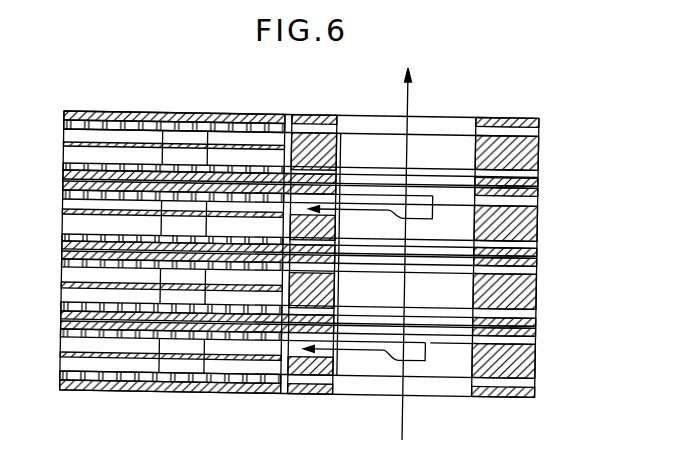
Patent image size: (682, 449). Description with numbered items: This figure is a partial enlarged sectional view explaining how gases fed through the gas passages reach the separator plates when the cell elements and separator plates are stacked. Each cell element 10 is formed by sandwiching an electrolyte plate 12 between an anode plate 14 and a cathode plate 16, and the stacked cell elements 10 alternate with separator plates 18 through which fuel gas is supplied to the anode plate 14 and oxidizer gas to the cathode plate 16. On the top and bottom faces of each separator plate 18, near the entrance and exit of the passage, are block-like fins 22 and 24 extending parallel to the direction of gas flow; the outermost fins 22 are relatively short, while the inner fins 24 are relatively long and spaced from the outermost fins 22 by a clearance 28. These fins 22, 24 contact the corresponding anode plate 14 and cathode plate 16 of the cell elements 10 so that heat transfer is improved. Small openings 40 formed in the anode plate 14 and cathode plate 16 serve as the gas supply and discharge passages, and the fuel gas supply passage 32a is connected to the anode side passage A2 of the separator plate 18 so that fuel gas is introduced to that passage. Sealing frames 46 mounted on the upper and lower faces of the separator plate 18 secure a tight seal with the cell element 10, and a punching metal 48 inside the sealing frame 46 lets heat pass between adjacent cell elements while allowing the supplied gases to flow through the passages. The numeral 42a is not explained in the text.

The cell element 10 is at (602, 158).
The electrolyte plate 12 is at (70, 257).
The anode plate 14 is at (70, 271).
The cathode plate 16 is at (68, 247).
The separator plate 18 is at (541, 308).
The outermost fins 22 is at (249, 140).
The fins 24 is at (106, 136).
The clearance 28 is at (196, 368).
The fuel gas supply passage 32a is at (405, 437).
The small openings 40 is at (351, 396).
The hatched block 42a is at (541, 372).
The sealing frames 46 is at (541, 262).
The punching metal 48 is at (123, 378).
The anode side passage A2 is at (352, 216).